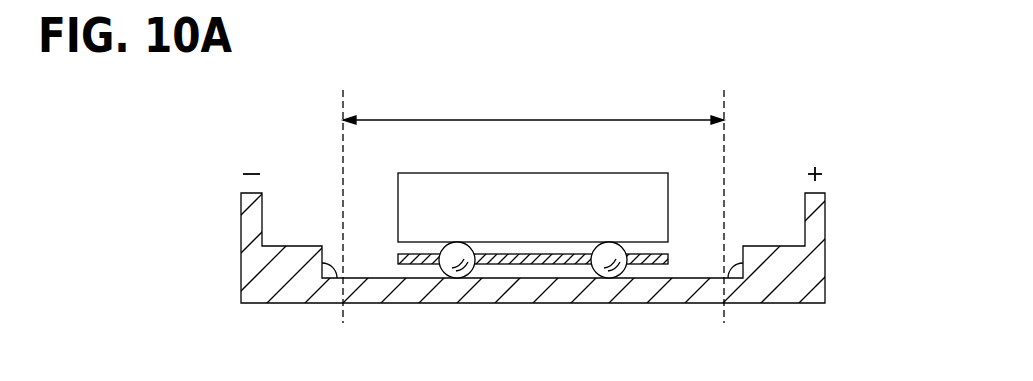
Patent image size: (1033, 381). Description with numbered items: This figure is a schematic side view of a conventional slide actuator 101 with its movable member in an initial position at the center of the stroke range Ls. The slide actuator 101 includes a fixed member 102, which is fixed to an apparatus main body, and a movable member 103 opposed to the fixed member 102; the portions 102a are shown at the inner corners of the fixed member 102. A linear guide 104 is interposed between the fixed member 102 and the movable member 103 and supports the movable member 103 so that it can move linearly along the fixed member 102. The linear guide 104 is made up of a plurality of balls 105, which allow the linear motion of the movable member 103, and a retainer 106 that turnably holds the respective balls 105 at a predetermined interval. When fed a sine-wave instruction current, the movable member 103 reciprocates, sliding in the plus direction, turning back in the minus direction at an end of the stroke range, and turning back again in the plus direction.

The slide actuator 101 is at (531, 228).
The fixed member 102 is at (808, 304).
The electrode connection portion 102a is at (331, 271).
The movable member 103 is at (537, 173).
The linear guide 104 is at (536, 311).
The balls 105 is at (618, 344).
The retainer 106 is at (535, 265).